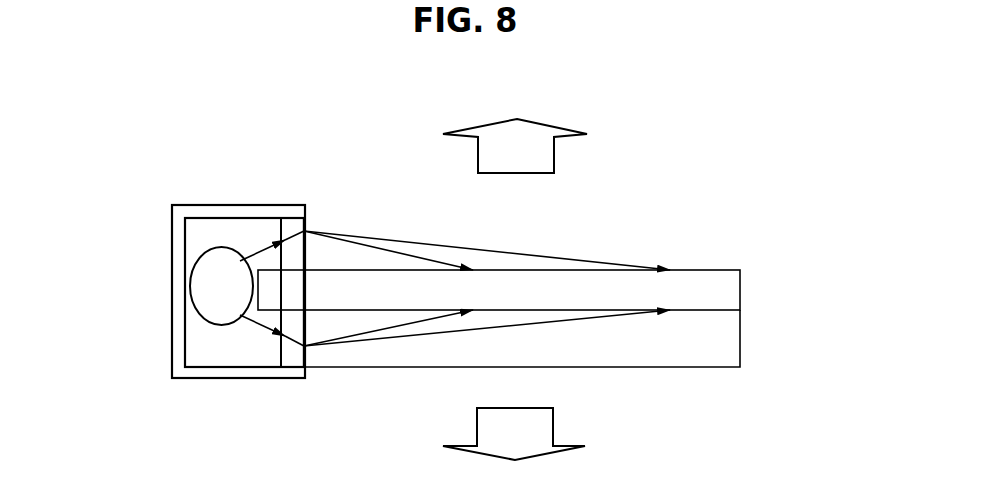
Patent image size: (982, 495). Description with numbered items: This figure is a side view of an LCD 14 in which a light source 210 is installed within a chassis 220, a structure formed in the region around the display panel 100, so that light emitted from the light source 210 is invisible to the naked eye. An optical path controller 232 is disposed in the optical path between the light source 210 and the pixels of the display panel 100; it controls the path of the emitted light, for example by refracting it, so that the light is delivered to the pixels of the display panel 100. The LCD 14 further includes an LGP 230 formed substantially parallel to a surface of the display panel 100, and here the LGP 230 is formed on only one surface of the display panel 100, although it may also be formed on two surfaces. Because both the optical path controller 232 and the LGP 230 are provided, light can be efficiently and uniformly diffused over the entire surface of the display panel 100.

The LCD 14 is at (706, 139).
The display panel 100 is at (722, 292).
The light source 210 is at (230, 279).
The chassis 220 is at (180, 321).
The LGP 230 is at (722, 345).
The optical path controller 232 is at (300, 248).